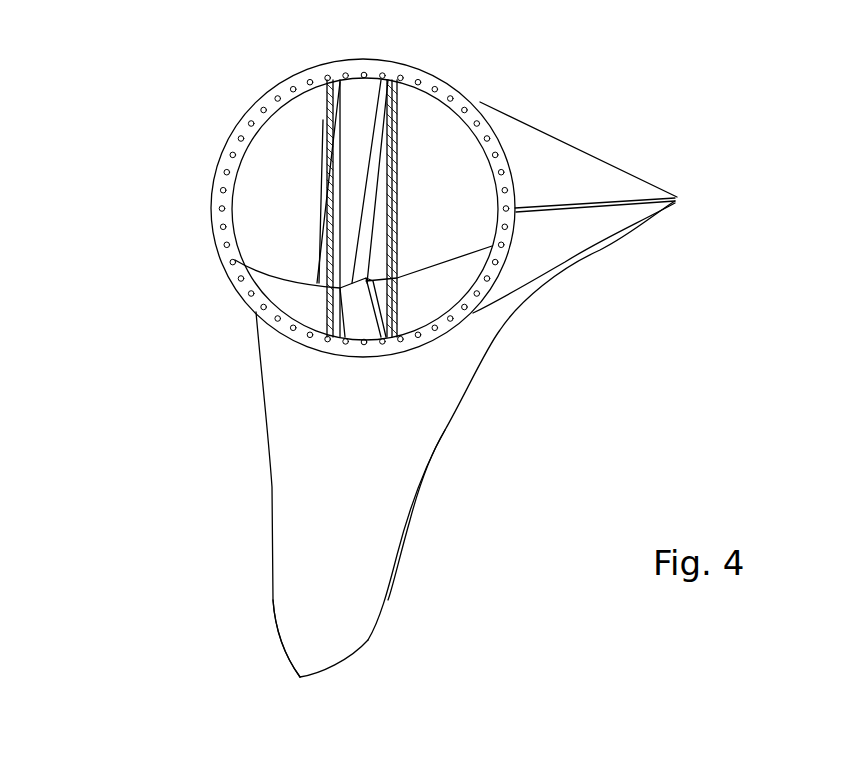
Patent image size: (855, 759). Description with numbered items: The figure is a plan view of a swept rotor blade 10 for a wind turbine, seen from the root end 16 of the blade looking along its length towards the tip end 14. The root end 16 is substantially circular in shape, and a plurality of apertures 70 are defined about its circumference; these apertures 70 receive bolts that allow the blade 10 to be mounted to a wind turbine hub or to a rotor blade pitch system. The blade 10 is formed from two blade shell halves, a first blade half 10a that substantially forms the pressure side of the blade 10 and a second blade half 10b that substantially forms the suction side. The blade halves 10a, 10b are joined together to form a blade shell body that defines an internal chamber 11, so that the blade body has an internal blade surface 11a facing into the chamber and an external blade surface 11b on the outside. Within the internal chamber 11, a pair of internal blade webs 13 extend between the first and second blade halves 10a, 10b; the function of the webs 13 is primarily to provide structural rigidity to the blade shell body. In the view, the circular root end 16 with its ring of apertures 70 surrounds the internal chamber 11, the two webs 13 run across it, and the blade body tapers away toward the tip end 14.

The swept rotor blade 10 is at (148, 318).
The first blade half 10a is at (552, 237).
The second blade half 10b is at (577, 158).
The internal chamber 11 is at (458, 217).
The internal blade surface 11a is at (435, 287).
The external blade surface 11b is at (425, 382).
The internal blade webs 13 is at (390, 160).
The tip end 14 is at (302, 643).
The root end 16 is at (237, 143).
The apertures 70 is at (428, 83).